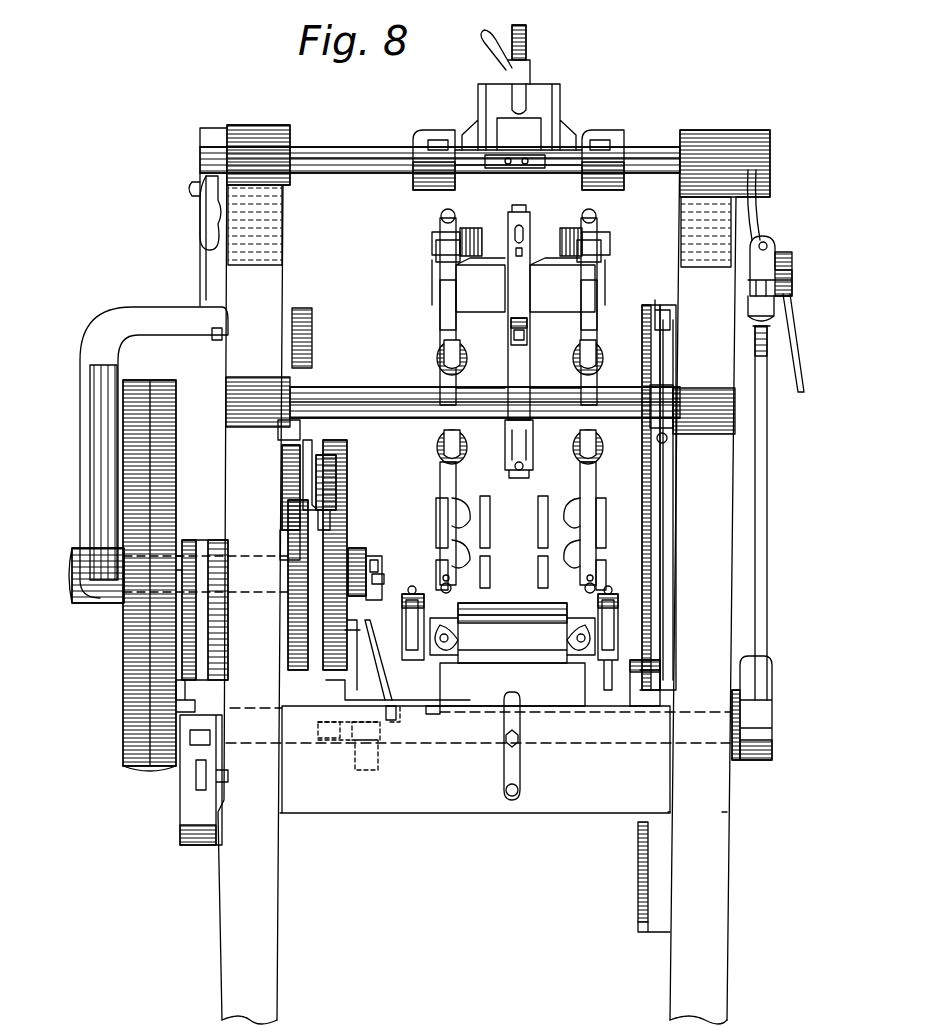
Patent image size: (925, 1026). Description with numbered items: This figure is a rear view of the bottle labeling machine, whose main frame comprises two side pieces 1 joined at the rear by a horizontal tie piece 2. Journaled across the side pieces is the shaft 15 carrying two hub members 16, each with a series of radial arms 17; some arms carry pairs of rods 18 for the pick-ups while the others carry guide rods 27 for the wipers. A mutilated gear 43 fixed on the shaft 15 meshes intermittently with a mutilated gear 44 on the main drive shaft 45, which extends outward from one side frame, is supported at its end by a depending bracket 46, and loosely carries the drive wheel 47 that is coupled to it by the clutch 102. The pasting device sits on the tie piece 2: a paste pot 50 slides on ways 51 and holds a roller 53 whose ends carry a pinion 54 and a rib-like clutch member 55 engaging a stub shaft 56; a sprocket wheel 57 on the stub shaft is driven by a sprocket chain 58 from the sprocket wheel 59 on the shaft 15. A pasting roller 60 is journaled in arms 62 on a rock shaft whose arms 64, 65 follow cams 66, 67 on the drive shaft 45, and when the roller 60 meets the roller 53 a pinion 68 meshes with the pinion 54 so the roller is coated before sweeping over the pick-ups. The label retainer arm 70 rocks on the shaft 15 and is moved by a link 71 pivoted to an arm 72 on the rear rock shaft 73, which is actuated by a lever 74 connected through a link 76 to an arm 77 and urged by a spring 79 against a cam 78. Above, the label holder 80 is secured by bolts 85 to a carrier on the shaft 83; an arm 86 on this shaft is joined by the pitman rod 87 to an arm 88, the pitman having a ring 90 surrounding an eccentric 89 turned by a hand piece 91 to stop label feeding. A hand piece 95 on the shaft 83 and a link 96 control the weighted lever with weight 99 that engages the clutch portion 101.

The side pieces 1 is at (228, 868).
The horizontal tie piece 2 is at (462, 806).
The shaft 15 is at (382, 396).
The hub members 16 is at (543, 392).
The radial arms 17 is at (460, 372).
The rods 18 is at (448, 480).
The guide rods 27 is at (440, 330).
The mutilated gear 43 is at (312, 345).
The mutilated gear 44 is at (296, 638).
The main drive shaft 45 is at (72, 578).
The depending bracket 46 is at (92, 458).
The drive wheel 47 is at (136, 690).
The paste pot 50 is at (532, 739).
The ways 51 is at (432, 712).
The roller 53 is at (494, 668).
The pinion 54 is at (406, 706).
The clutch member 55 is at (612, 656).
The stub shaft 56 is at (616, 656).
The sprocket wheel 57 is at (660, 704).
The sprocket chain 58 is at (668, 530).
The sprocket wheel 59 is at (676, 374).
The pasting roller 60 is at (492, 612).
The arms 62 is at (618, 600).
The arm 64 is at (368, 618).
The arm 65 is at (372, 724).
The cam 66 is at (362, 572).
The cam 67 is at (312, 466).
The pinion 68 is at (398, 598).
The arm 70 is at (522, 258).
The link 71 is at (528, 322).
The arm 72 is at (530, 432).
The rock shaft 73 is at (300, 398).
The lever 74 is at (334, 482).
The link 76 is at (296, 470).
The arm 77 is at (280, 428).
The cam 78 is at (335, 538).
The spring 79 is at (652, 492).
The label holder 80 is at (545, 98).
The shaft 83 is at (358, 150).
The bolts 85 is at (603, 145).
The arm 86 is at (748, 216).
The pitman rod 87 is at (768, 492).
The arm 88 is at (760, 730).
The eccentric 89 is at (794, 264).
The ring 90 is at (770, 272).
The hand piece 91 is at (794, 336).
The hand piece 95 is at (213, 222).
The link 96 is at (204, 250).
The weight 99 is at (198, 780).
The clutch portion 101 is at (183, 683).
The clutch 102 is at (216, 630).